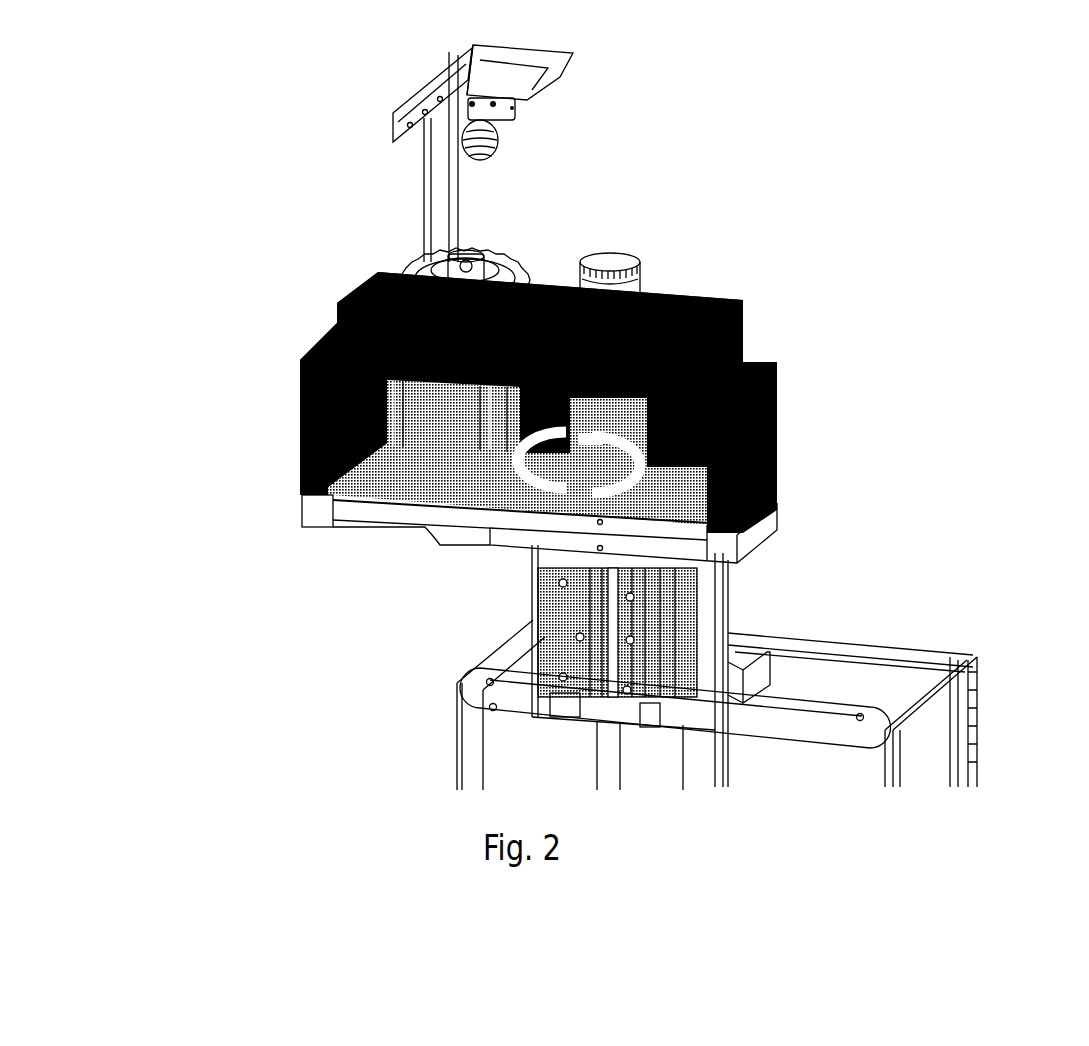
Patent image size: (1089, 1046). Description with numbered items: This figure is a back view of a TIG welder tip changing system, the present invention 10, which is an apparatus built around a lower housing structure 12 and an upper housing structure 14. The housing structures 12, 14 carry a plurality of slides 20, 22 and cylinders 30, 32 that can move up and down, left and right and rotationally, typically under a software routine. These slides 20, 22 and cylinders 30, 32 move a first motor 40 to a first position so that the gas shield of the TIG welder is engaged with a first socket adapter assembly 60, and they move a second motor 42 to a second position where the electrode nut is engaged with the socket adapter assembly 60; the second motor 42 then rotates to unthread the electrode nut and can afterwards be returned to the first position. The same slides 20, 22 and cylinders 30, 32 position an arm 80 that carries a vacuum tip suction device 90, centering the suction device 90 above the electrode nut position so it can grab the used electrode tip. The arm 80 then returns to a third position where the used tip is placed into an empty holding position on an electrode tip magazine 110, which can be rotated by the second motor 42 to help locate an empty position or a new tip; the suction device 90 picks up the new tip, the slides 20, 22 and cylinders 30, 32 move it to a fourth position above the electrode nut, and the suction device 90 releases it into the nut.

The present invention 10 is at (536, 331).
The lower housing structure 12 is at (930, 653).
The upper housing structure 14 is at (743, 327).
The slide 20 is at (768, 665).
The slide 22 is at (780, 515).
The cylinder 30 is at (528, 602).
The cylinder 32 is at (543, 90).
The first motor 40 is at (780, 438).
The second motor 42 is at (295, 415).
The socket adapter assembly 60 is at (467, 263).
The arm 80 is at (428, 180).
The vacuum tip suction device 90 is at (503, 140).
The electrode tip magazine 110 is at (415, 265).